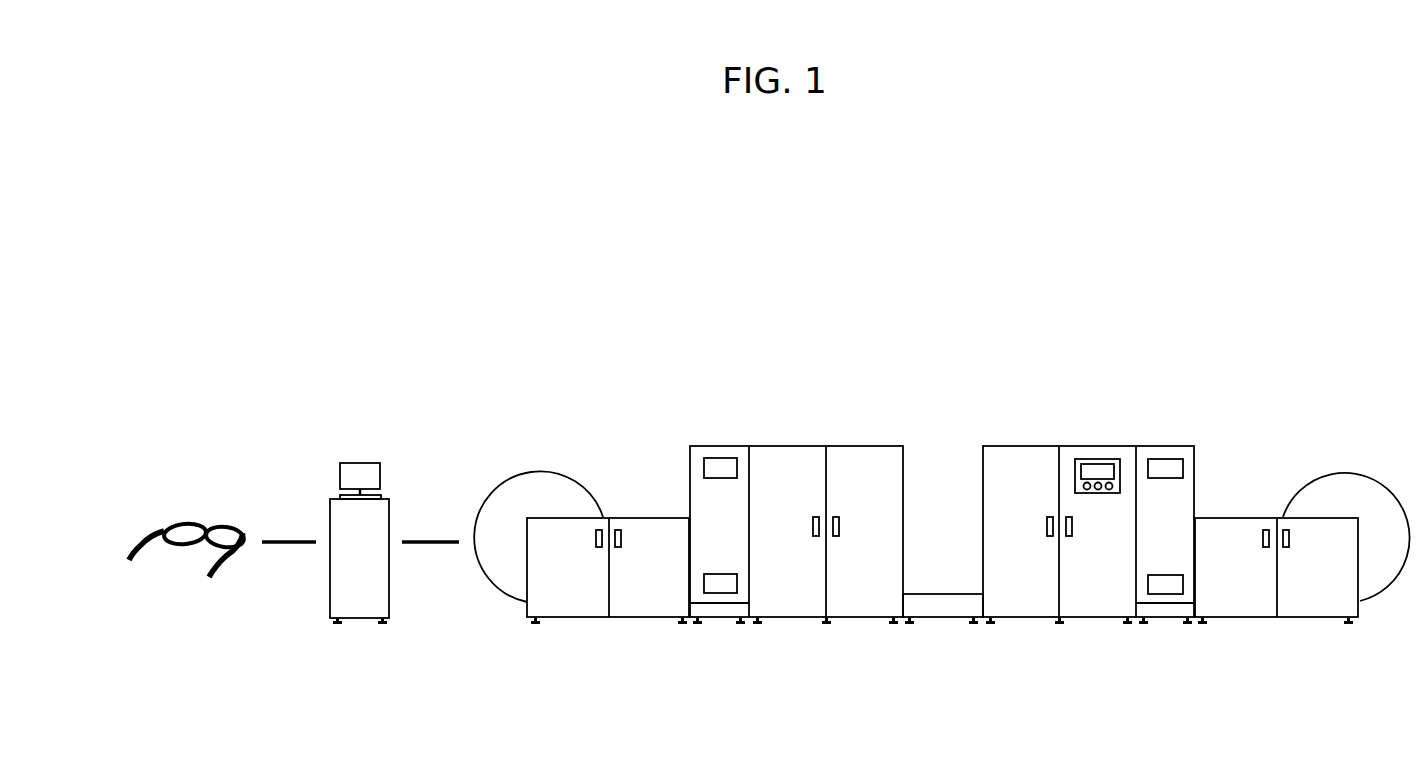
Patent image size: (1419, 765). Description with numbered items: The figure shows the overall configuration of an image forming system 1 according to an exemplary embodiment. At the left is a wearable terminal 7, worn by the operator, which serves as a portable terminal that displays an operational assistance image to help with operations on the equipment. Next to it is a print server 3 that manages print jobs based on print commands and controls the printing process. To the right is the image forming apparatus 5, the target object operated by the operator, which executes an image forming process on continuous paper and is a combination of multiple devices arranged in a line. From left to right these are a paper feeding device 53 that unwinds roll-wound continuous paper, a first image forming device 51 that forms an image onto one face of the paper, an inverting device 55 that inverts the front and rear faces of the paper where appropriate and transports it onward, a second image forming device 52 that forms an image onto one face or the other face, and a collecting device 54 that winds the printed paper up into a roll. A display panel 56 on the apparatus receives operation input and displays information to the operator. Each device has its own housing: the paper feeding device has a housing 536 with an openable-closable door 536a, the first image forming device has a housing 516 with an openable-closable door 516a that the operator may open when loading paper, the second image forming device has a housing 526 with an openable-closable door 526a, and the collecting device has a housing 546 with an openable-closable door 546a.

The image forming system 1 is at (1315, 198).
The print server 3 is at (361, 437).
The image forming apparatus 5 is at (1222, 352).
The wearable terminal 7 is at (207, 503).
The first image forming device 51 is at (757, 427).
The second image forming device 52 is at (1095, 430).
The paper feeding device 53 is at (602, 448).
The collecting device 54 is at (1277, 483).
The inverting device 55 is at (928, 583).
The display panel 56 is at (1124, 460).
The housing 516 is at (863, 446).
The openable-closable door 516a is at (862, 596).
The housing 526 is at (1017, 446).
The openable-closable door 526a is at (1024, 596).
The housing 536 is at (645, 517).
The openable-closable door 536a is at (575, 596).
The housing 546 is at (1215, 517).
The openable-closable door 546a is at (1241, 596).